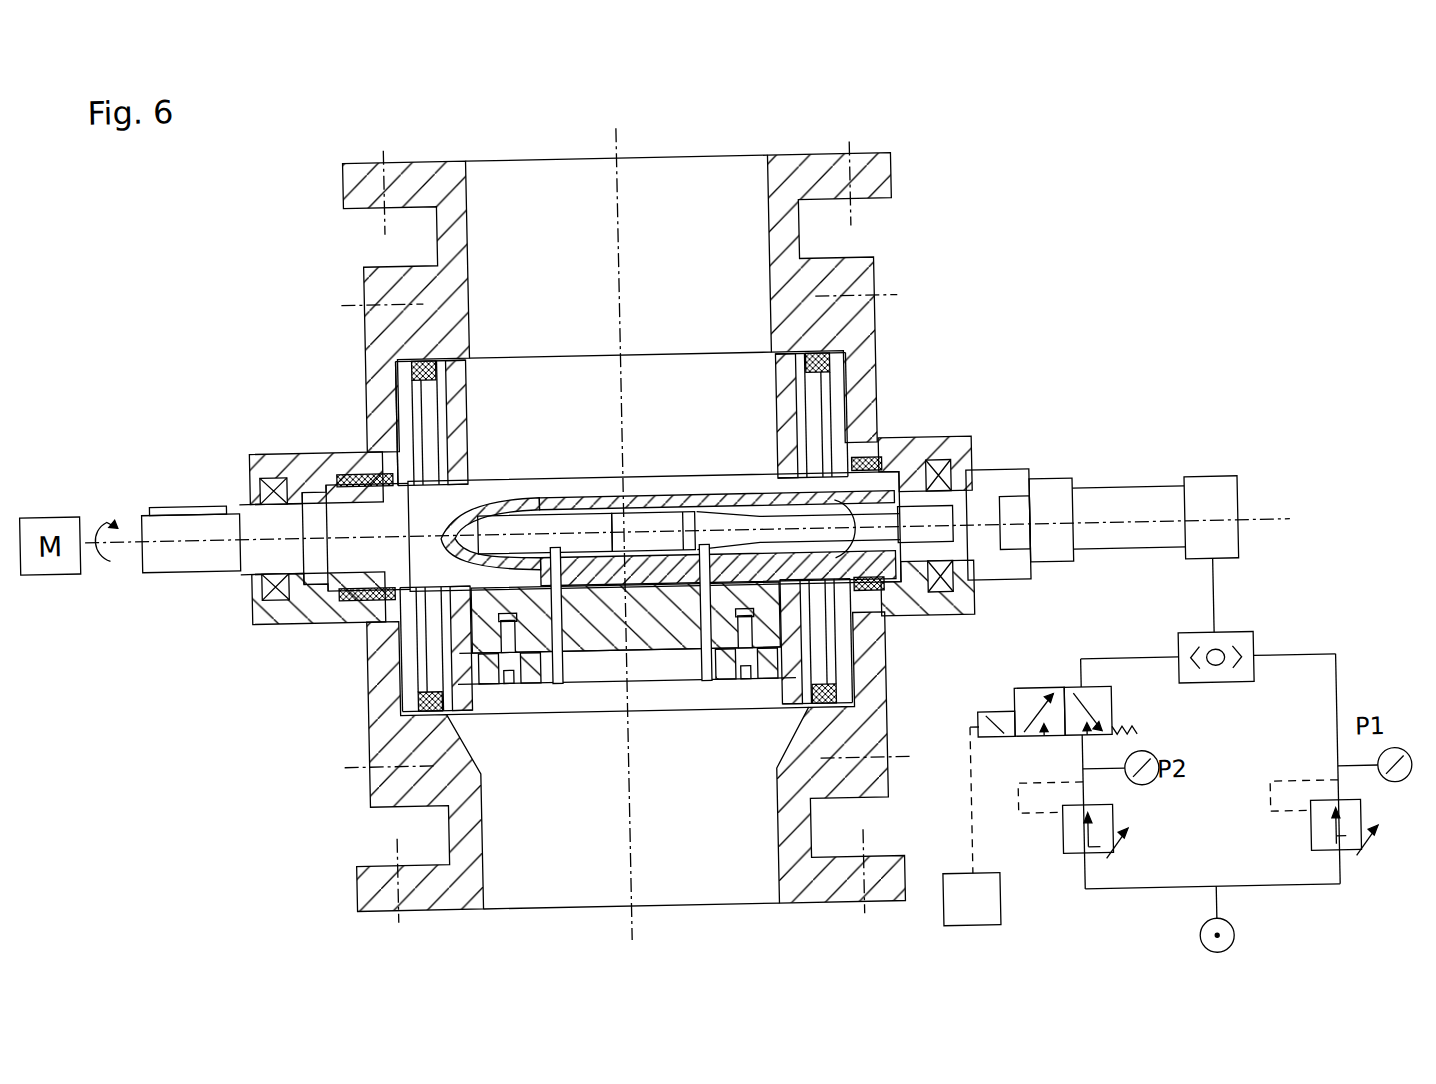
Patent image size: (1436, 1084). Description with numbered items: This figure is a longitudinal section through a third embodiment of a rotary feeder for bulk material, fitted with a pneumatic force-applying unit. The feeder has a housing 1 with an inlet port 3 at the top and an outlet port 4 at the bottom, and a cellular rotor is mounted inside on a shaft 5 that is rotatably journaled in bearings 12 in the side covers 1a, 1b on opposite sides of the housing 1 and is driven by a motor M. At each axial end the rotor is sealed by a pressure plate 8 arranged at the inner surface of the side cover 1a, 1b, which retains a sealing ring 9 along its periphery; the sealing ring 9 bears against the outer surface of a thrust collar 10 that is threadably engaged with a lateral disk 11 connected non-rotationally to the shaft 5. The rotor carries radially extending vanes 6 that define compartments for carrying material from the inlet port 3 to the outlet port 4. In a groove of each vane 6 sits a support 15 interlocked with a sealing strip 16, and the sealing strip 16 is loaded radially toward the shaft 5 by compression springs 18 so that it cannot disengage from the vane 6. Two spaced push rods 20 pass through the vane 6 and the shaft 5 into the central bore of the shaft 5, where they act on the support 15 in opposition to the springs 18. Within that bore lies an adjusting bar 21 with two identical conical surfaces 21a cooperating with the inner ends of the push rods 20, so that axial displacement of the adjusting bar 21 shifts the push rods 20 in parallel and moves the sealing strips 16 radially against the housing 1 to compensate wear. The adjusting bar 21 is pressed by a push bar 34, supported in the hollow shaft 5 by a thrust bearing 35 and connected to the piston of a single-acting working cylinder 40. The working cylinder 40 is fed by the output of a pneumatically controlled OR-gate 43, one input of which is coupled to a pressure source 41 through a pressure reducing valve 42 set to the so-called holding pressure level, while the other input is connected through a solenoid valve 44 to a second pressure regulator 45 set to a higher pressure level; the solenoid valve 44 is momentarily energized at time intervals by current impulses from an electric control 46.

The housing 1 is at (627, 532).
The side cover 1a is at (377, 286).
The side cover 1b is at (874, 328).
The inlet port 3 is at (660, 172).
The outlet port 4 is at (546, 877).
The shaft 5 is at (252, 559).
The vane 6 is at (613, 633).
The pressure plate 8 is at (406, 412).
The sealing ring 9 is at (416, 366).
The thrust collar 10 is at (443, 366).
The lateral disk 11 is at (470, 426).
The bearing 12 is at (336, 597).
The support 15 is at (562, 682).
The sealing strip 16 is at (658, 695).
The compression spring 18 is at (508, 686).
The push rod 20 is at (712, 682).
The adjusting bar 21 is at (652, 520).
The conical surface 21a is at (573, 523).
The push bar 34 is at (982, 590).
The thrust bearing 35 is at (882, 582).
The working cylinder 40 is at (1115, 550).
The pressure source 41 is at (1226, 943).
The pressure reducing valve 42 is at (1305, 846).
The OR-gate 43 is at (1240, 650).
The solenoid valve 44 is at (1053, 694).
The second pressure regulator 45 is at (1056, 858).
The electric control 46 is at (964, 922).